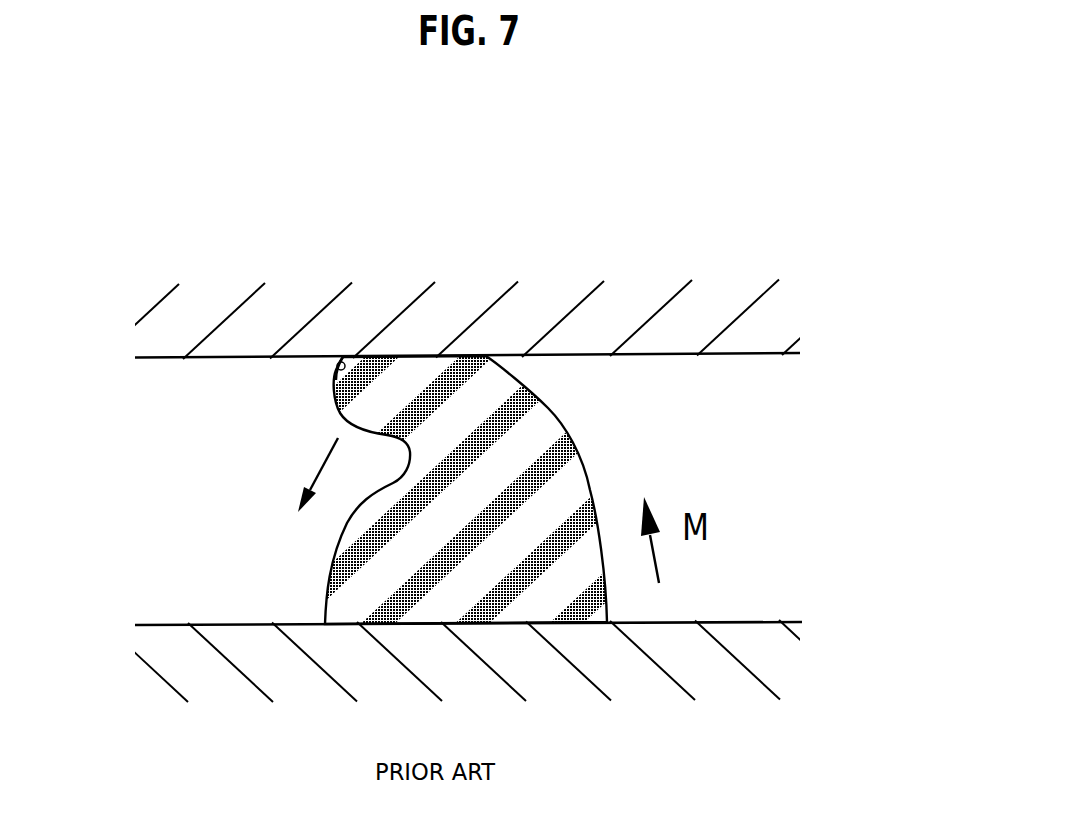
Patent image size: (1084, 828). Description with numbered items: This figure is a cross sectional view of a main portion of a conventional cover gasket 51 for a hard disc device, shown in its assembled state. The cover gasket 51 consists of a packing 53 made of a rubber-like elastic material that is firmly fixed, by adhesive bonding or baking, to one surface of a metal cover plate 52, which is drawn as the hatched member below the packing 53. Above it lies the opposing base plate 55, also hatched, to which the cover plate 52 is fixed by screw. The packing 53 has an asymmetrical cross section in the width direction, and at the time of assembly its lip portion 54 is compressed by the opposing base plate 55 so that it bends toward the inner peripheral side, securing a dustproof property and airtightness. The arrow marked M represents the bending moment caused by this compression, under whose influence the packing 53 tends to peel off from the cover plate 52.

The cover gasket 51 is at (215, 514).
The cover plate 52 is at (743, 640).
The packing 53 is at (530, 435).
The lip portion 54 is at (383, 400).
The opposing base plate 55 is at (757, 323).